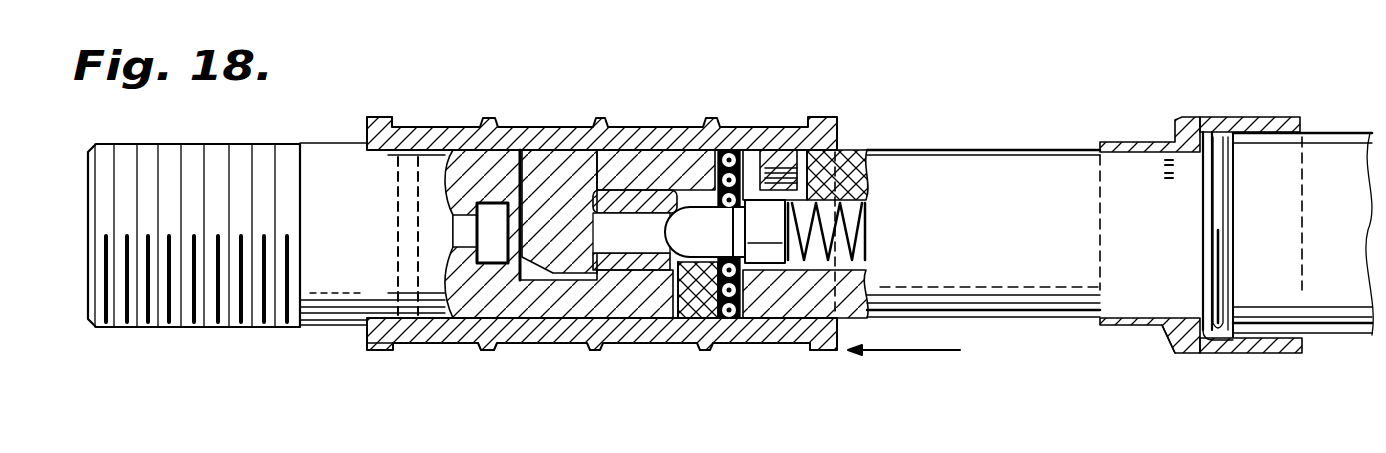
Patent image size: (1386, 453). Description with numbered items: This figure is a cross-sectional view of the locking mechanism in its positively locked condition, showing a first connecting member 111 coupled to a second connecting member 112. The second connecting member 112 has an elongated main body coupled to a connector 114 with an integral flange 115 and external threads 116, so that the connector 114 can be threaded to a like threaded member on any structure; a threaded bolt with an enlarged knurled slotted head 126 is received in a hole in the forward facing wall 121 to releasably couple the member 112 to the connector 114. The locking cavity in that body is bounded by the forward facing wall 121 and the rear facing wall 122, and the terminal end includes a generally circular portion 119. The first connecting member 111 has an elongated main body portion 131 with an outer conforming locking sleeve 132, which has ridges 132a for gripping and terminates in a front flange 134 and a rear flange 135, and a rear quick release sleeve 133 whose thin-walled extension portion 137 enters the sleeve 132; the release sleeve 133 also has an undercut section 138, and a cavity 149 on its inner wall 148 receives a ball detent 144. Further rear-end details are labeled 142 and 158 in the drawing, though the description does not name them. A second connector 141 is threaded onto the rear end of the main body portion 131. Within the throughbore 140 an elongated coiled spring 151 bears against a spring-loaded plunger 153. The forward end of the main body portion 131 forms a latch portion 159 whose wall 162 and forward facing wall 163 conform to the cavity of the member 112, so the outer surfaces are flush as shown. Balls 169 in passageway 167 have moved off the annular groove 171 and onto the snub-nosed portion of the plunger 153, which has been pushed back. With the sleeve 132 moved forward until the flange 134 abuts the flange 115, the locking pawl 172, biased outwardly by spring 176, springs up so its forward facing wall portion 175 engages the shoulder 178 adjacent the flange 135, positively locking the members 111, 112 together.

The first connecting member 111 is at (960, 138).
The second connecting member 112 is at (342, 329).
The connector 114 is at (310, 158).
The integral flange 115 is at (369, 116).
The external threads 116 is at (195, 305).
The generally circular portion 119 is at (673, 297).
The forward facing wall 121 is at (515, 290).
The rear facing wall 122 is at (568, 290).
The enlarged knurled slotted head 126 is at (375, 352).
The main body portion 131 is at (1035, 282).
The locking sleeve 132 is at (630, 128).
The ridges 132a is at (480, 347).
The rear quick release sleeve 133 is at (1268, 354).
The front flange 134 is at (367, 351).
The rear flange 135 is at (823, 352).
The thin-walled extension portion 137 is at (1117, 140).
The undercut section 138 is at (1260, 134).
The throughbore 140 is at (870, 216).
The second connector 141 is at (1338, 152).
The seal channel 142 is at (1208, 338).
The ball detent 144 is at (1173, 150).
The inner wall 148 is at (1135, 152).
The cavity 149 is at (1142, 327).
The coiled spring 151 is at (867, 251).
The spring-loaded plunger 153 is at (700, 277).
The tube 158 is at (983, 233).
The latch portion 159 is at (542, 172).
The wall 162 is at (594, 190).
The forward facing wall 163 is at (527, 165).
The passageway 167 is at (722, 162).
The balls 169 is at (733, 317).
The annular groove 171 is at (407, 125).
The locking pawl 172 is at (783, 147).
The forward facing wall portion 175 is at (768, 148).
The spring 176 is at (843, 152).
The shoulder 178 is at (797, 330).